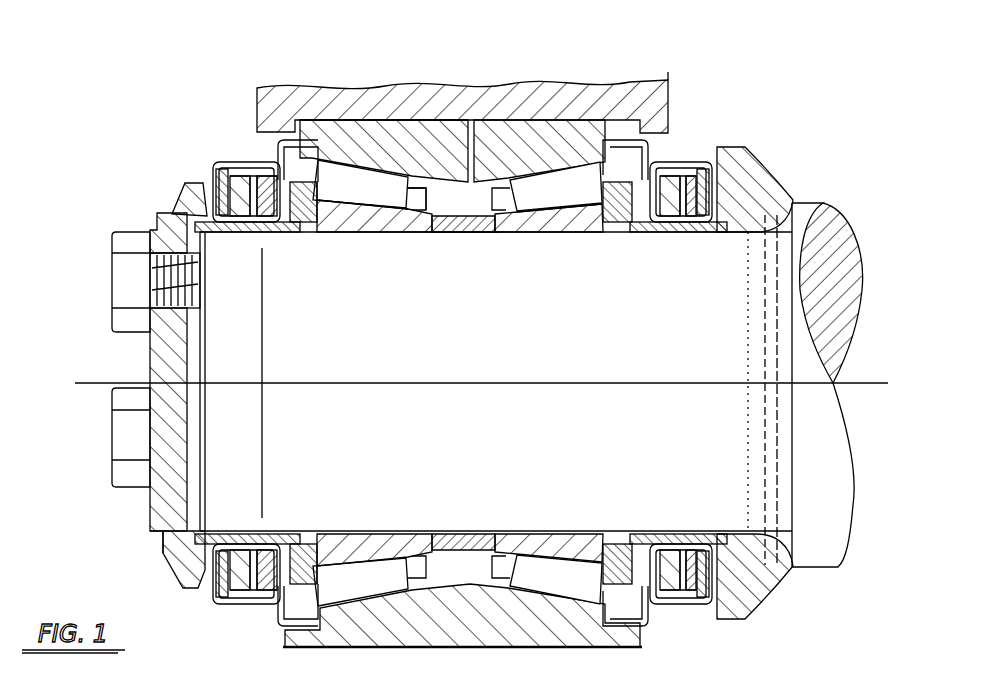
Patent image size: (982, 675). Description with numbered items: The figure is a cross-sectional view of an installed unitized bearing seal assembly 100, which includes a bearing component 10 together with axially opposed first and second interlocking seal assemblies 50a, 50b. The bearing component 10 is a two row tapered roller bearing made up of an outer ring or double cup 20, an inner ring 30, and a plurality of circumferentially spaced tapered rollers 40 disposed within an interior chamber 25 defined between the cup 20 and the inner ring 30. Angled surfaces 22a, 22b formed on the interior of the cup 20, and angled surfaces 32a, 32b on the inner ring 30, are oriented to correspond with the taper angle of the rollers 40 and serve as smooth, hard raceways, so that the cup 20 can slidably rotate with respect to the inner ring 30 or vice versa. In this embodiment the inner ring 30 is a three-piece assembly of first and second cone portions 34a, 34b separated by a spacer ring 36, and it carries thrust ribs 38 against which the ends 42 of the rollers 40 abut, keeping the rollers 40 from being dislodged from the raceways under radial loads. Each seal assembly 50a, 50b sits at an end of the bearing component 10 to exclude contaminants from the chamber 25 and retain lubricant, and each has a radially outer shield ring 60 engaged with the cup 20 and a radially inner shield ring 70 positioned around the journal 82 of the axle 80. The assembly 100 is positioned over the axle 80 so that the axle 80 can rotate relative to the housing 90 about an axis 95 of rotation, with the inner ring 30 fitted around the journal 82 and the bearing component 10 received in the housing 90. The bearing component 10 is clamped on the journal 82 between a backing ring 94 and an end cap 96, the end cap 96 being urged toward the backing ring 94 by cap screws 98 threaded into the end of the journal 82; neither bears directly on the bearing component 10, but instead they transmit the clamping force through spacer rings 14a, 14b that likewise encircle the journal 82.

The bearing component 10 is at (468, 174).
The spacer ring 14a is at (287, 234).
The spacer ring 14b is at (713, 238).
The outer ring or double cup 20 is at (362, 133).
The angled surface 22a is at (318, 212).
The angled surface 22b is at (602, 234).
The interior chamber 25 is at (464, 238).
The inner ring 30 is at (400, 214).
The angled surface 32a is at (462, 128).
The angled surface 32b is at (578, 122).
The first cone portion 34a is at (375, 220).
The second cone portion 34b is at (560, 234).
The spacer ring 36 is at (457, 238).
The thrust rib 38 is at (308, 173).
The tapered roller 40 is at (378, 198).
The roller end 42 is at (468, 134).
The first interlocking seal assembly 50a is at (233, 156).
The second interlocking seal assembly 50b is at (676, 158).
The radially outer shield ring 60 is at (650, 630).
The radially inner shield ring 70 is at (700, 607).
The axle 80 is at (823, 545).
The journal 82 is at (618, 394).
The housing 90 is at (462, 91).
The backing ring 94 is at (742, 147).
The axis of rotation 95 is at (88, 385).
The end cap 96 is at (160, 521).
The cap screw 98 is at (110, 280).
The unitized bearing seal assembly 100 is at (765, 141).